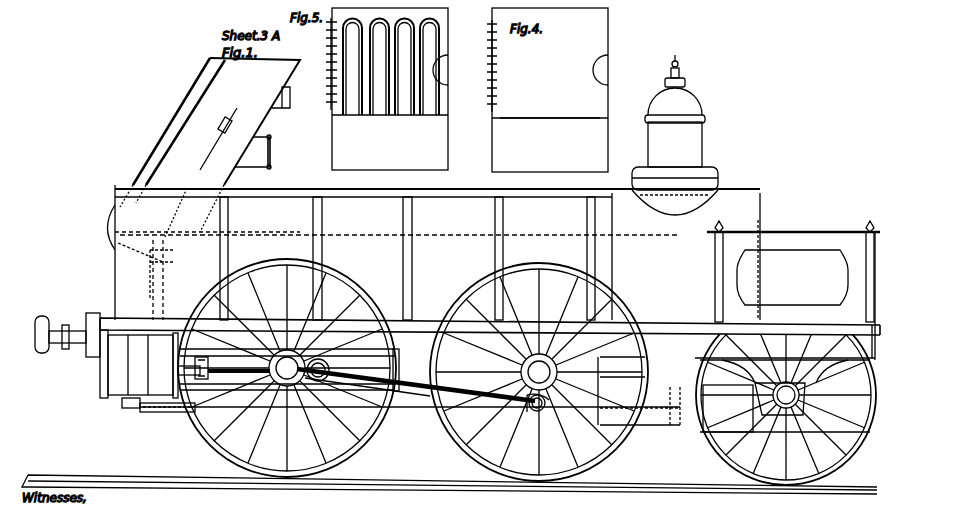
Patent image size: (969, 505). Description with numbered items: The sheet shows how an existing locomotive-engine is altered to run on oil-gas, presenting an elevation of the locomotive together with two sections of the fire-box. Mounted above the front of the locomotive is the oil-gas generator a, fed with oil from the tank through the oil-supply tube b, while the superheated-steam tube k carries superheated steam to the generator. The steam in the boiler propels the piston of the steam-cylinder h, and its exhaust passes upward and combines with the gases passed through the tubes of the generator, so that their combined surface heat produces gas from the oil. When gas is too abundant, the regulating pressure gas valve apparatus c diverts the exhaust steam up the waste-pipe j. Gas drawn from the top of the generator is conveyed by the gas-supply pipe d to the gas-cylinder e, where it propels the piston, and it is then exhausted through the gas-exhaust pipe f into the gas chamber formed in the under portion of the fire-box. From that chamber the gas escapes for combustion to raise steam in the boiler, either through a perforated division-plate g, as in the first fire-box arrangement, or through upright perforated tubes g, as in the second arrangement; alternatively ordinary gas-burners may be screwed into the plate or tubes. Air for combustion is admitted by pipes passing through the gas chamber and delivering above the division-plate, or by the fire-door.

In FIG. 1, the oil-gas generator a is at (210, 147).
In FIG. 1, the oil-supply tube b is at (437, 248).
In FIG. 1, the regulating pressure gas valve apparatus c is at (221, 139).
In FIG. 1, the gas-supply pipe d is at (204, 255).
In FIG. 1, the gas-cylinder e is at (787, 290).
In FIG. 1, the gas-exhaust pipe f is at (490, 371).
In FIG. 1, the perforated division-plate / perforated tubes g is at (413, 333).
In FIG. 5, the perforated division-plate / perforated tubes g is at (391, 67).
In FIG. 4, the perforated division-plate / perforated tubes g is at (550, 113).
In FIG. 1, the steam-cylinder h is at (640, 135).
In FIG. 1, the waste-pipe j is at (167, 161).
In FIG. 1, the superheated-steam tube k is at (400, 230).